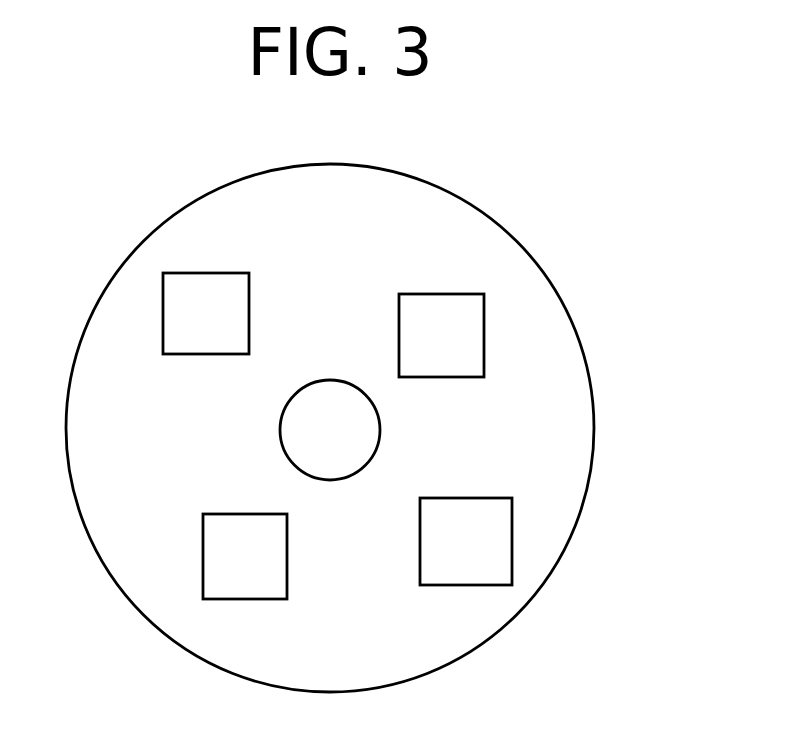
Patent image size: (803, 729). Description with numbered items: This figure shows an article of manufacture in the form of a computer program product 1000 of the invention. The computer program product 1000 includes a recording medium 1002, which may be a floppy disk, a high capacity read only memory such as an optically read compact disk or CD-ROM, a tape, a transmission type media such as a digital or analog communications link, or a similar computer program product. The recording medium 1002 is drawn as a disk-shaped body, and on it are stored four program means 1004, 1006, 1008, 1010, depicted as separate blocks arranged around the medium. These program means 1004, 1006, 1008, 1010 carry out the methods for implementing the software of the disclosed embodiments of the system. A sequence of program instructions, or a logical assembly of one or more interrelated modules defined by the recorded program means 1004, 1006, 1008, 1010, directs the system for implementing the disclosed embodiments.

The computer program product 1000 is at (558, 250).
The recording medium 1002 is at (112, 275).
The program means 1004 is at (245, 556).
The program means 1006 is at (466, 541).
The program means 1008 is at (441, 335).
The program means 1010 is at (206, 313).